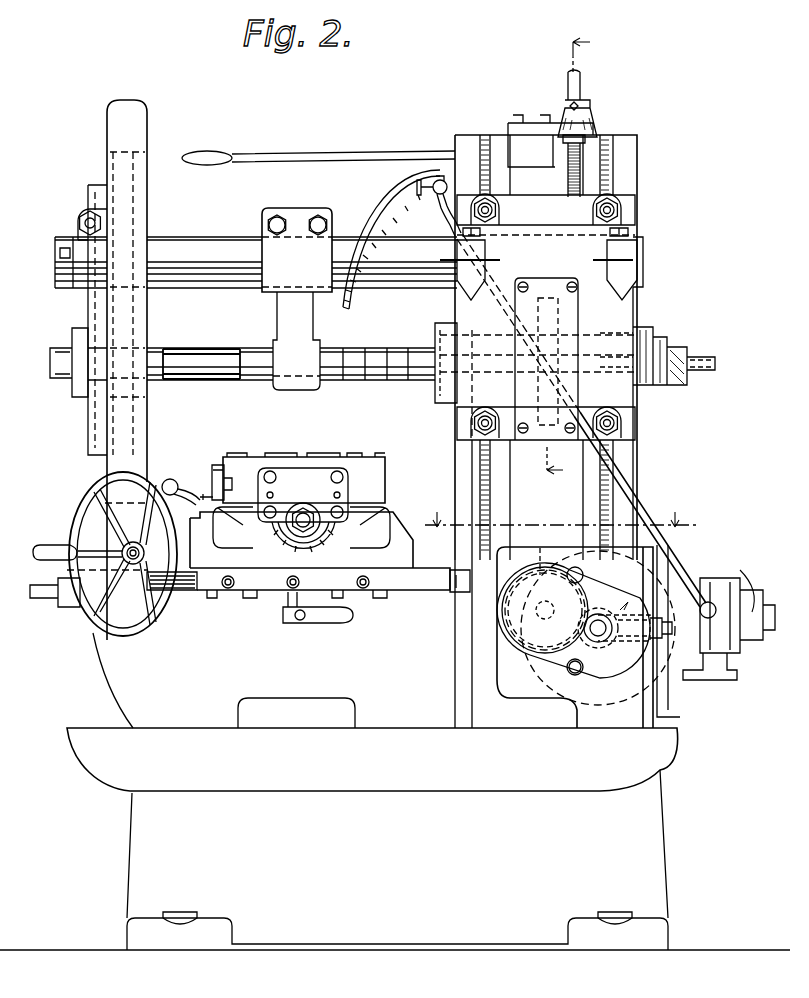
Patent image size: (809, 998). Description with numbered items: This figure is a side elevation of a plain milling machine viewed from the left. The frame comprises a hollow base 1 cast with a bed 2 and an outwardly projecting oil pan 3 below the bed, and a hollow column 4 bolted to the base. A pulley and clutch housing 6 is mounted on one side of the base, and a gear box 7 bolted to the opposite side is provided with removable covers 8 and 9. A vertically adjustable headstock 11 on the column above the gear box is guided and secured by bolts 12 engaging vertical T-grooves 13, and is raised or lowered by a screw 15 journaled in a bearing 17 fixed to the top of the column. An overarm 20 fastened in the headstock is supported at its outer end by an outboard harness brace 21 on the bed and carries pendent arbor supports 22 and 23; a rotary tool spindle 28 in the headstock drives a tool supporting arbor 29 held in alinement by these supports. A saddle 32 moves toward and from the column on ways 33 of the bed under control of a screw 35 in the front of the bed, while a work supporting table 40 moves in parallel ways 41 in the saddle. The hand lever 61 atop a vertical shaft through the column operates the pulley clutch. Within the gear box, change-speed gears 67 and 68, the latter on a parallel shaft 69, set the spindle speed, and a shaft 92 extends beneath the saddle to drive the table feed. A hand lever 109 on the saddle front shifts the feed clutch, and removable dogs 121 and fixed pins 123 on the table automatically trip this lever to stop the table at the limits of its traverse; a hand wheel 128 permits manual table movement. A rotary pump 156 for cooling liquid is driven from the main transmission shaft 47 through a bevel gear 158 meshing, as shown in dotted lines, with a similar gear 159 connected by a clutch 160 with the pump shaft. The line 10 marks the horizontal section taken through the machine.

The hollow base 1 is at (395, 860).
The bed 2 is at (282, 529).
The oil pan 3 is at (372, 759).
The hollow column 4 is at (546, 347).
The pulley and clutch housing 6 is at (660, 582).
The gear box 7 is at (575, 637).
The removable cover 8 is at (564, 313).
The removable cover 9 is at (668, 708).
The section line 10— 10 is at (555, 523).
The headstock and spindle housing 11 is at (563, 237).
The bolts 12 is at (500, 210).
The vertical T-grooves 13 is at (480, 170).
The screw 15 is at (568, 178).
The bearing 17 is at (598, 130).
The overarm 20 is at (256, 262).
The outboard harness brace 21 is at (112, 370).
The pendent arbor support 22 is at (72, 313).
The pendent arbor support 23 is at (283, 318).
The rotary tool spindle 28 is at (667, 337).
The tool supporting arbor 29 is at (377, 340).
The saddle 32 is at (320, 563).
The ways 33 is at (183, 592).
The screw 35 is at (63, 605).
The work supporting table 40 is at (385, 477).
The parallel ways 41 is at (370, 515).
The main spindle and feed transmission shaft 47 is at (545, 660).
The hand lever 61 is at (292, 153).
The change-speed gear 67 is at (604, 640).
The change-speed gear 68 is at (545, 590).
The parallel shaft 69 is at (545, 610).
The shaft 92 is at (460, 572).
The hand lever 109 is at (175, 483).
The removable dogs 121 is at (217, 468).
The fixed pins 123 is at (226, 500).
The hand wheel 128 is at (80, 503).
The rotary pump 156 is at (733, 573).
The bevel gear 158 is at (598, 628).
The bevel gear 159 is at (610, 598).
The clutch 160 is at (690, 592).